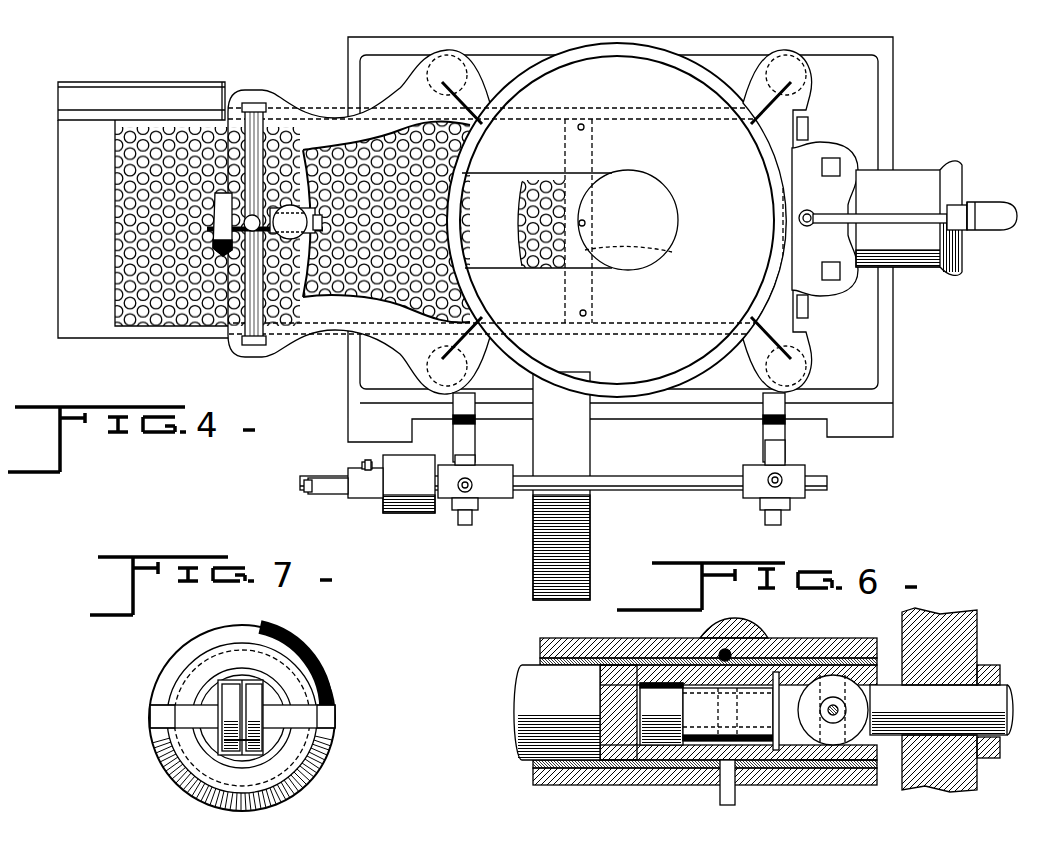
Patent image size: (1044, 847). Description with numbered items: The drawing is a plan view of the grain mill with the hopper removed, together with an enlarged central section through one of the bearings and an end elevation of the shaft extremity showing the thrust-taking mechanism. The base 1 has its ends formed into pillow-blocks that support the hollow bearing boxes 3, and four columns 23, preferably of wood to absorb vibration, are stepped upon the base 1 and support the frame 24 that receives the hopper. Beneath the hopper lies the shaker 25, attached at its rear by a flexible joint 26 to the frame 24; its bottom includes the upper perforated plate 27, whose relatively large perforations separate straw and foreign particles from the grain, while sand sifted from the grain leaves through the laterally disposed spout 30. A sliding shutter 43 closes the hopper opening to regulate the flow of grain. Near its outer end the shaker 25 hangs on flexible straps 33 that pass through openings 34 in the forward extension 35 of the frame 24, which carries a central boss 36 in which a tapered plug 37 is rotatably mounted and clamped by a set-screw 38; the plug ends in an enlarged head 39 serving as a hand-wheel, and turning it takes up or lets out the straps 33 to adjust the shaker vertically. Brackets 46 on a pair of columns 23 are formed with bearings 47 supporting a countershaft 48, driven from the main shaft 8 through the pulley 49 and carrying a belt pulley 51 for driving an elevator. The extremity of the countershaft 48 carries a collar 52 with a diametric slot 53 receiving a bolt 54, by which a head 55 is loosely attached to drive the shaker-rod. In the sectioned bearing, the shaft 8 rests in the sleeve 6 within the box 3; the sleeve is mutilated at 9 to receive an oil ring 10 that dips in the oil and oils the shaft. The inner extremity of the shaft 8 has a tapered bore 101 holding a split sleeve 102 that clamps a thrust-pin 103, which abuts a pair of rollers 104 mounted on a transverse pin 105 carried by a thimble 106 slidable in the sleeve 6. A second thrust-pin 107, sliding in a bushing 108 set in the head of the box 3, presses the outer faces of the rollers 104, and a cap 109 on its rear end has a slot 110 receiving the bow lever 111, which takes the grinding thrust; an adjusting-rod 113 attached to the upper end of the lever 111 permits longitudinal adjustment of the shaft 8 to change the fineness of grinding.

In FIG. 4, the base 1 is at (893, 388).
In FIG. 4, the bearing box 3 is at (915, 177).
In FIG. 7, the bearing box 3 is at (328, 690).
In FIG. 6, the bearing box 3 is at (545, 652).
In FIG. 7, the sleeve 6 is at (310, 763).
In FIG. 6, the sleeve 6 is at (590, 640).
In FIG. 6, the shaft 8 is at (527, 693).
In FIG. 6, the mutilation 9 is at (720, 643).
In FIG. 6, the oil ring 10 is at (743, 637).
In FIG. 4, the column 23 is at (428, 76).
In FIG. 4, the frame 24 is at (675, 372).
In FIG. 4, the shaker 25 is at (118, 338).
In FIG. 4, the flexible joint 26 is at (812, 226).
In FIG. 4, the perforated plate 27 is at (188, 326).
In FIG. 4, the spout 30 is at (97, 95).
In FIG. 4, the strap 33 is at (240, 130).
In FIG. 4, the opening 34 is at (253, 103).
In FIG. 4, the forward extension 35 is at (312, 112).
In FIG. 4, the boss 36 is at (270, 216).
In FIG. 4, the tapered plug 37 is at (243, 237).
In FIG. 4, the set-screw 38 is at (290, 236).
In FIG. 4, the head 39 is at (213, 230).
In FIG. 4, the sliding shutter 43 is at (647, 250).
In FIG. 4, the bracket 46 is at (476, 430).
In FIG. 4, the bearing 47 is at (478, 505).
In FIG. 4, the countershaft 48 is at (683, 492).
In FIG. 4, the pulley 49 is at (590, 540).
In FIG. 4, the belt pulley 51 is at (420, 514).
In FIG. 4, the collar 52 is at (368, 500).
In FIG. 4, the slot 53 is at (352, 496).
In FIG. 4, the bolt 54 is at (306, 486).
In FIG. 4, the head 55 is at (360, 470).
In FIG. 6, the bore 101 is at (640, 780).
In FIG. 6, the split sleeve 102 is at (777, 638).
In FIG. 6, the thrust-pin 103 is at (662, 703).
In FIG. 7, the roller 104 is at (217, 743).
In FIG. 6, the roller 104 is at (858, 650).
In FIG. 7, the transverse pin 105 is at (215, 708).
In FIG. 6, the transverse pin 105 is at (832, 700).
In FIG. 7, the thimble 106 is at (277, 680).
In FIG. 6, the thimble 106 is at (822, 777).
In FIG. 6, the second thrust-pin 107 is at (985, 750).
In FIG. 6, the bushing 108 is at (980, 670).
In FIG. 4, the cap 109 is at (962, 232).
In FIG. 4, the slot 110 is at (997, 231).
In FIG. 4, the bow lever 111 is at (985, 205).
In FIG. 4, the adjusting-rod 113 is at (868, 214).